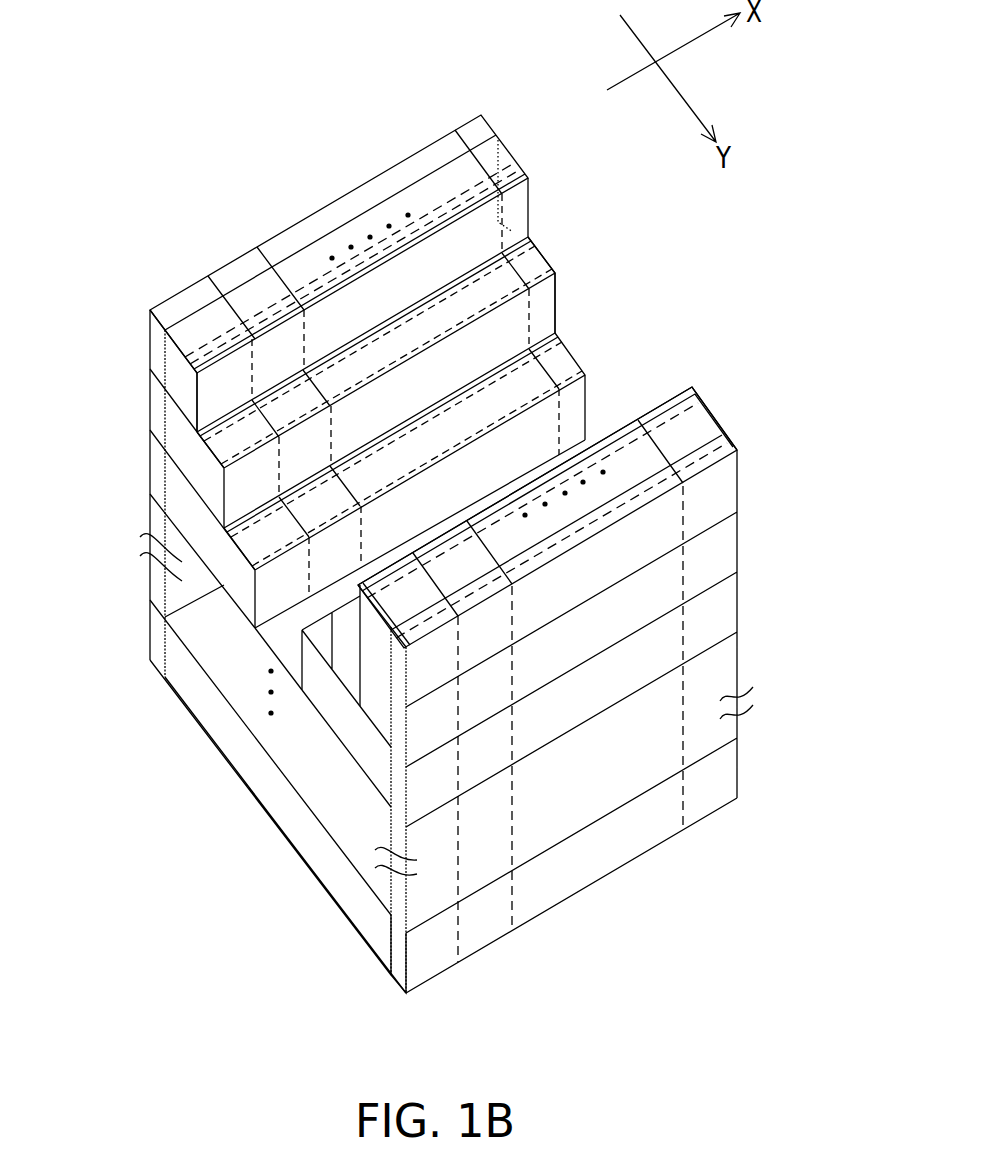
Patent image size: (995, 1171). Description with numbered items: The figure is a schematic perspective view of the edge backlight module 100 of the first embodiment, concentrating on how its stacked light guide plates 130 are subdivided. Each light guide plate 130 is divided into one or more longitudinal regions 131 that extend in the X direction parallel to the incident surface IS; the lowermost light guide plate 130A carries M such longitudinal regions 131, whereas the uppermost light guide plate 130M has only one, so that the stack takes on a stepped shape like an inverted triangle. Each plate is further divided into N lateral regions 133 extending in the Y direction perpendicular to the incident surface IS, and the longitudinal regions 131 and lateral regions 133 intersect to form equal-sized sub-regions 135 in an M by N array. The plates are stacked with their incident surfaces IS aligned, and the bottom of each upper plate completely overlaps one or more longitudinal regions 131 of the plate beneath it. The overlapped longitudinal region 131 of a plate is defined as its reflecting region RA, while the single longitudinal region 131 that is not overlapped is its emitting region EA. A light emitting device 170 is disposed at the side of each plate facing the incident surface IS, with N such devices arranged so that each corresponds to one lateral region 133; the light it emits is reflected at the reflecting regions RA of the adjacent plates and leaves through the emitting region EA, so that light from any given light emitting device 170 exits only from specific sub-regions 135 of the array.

The edge backlight module 100 is at (798, 1041).
The light guide plates 130 is at (62, 330).
The uppermost light guide plate 130M is at (172, 360).
The lowermost light guide plate 130A is at (173, 655).
The light emitting device 170 is at (182, 302).
The lateral regions 133 is at (230, 383).
The longitudinal regions 131 is at (706, 410).
The sub-regions 135 is at (378, 612).
The reflecting region RA is at (513, 226).
The emitting region EA is at (543, 257).
The incident surface IS is at (390, 952).